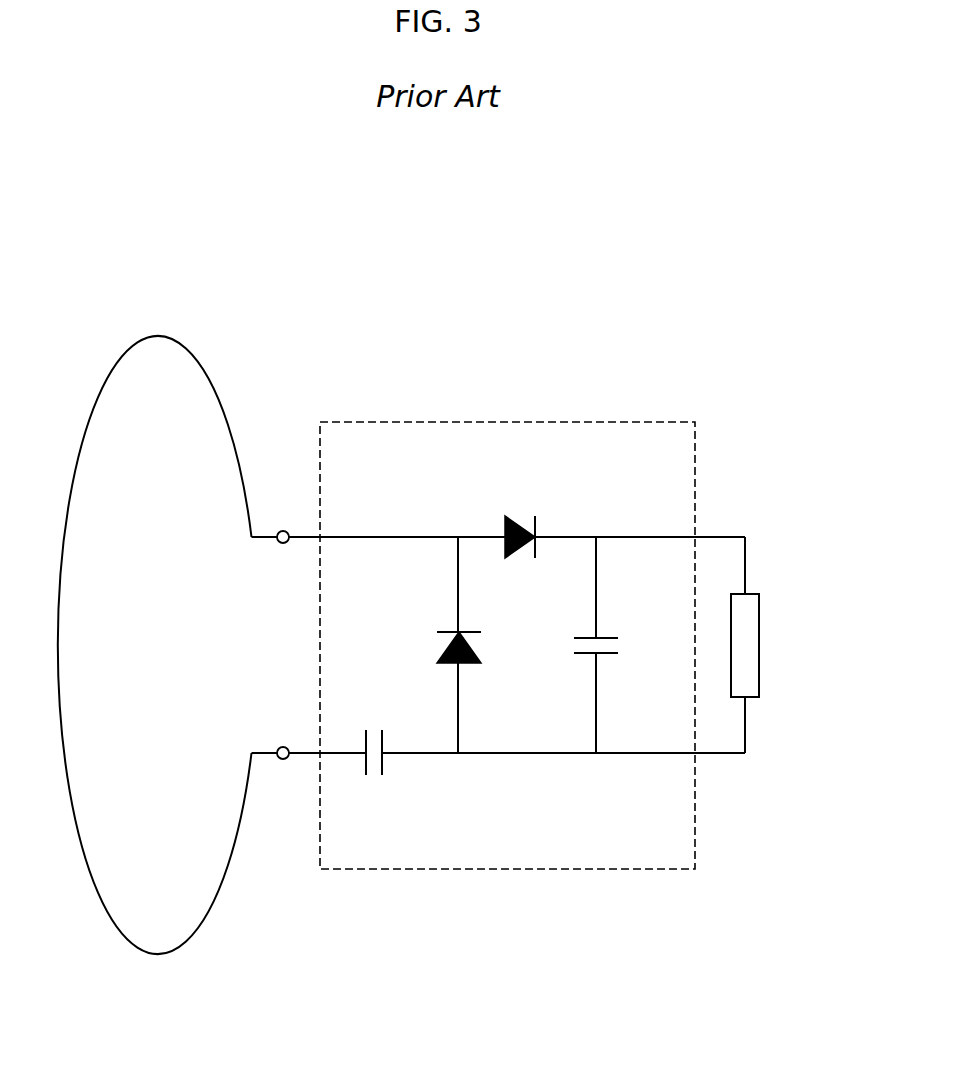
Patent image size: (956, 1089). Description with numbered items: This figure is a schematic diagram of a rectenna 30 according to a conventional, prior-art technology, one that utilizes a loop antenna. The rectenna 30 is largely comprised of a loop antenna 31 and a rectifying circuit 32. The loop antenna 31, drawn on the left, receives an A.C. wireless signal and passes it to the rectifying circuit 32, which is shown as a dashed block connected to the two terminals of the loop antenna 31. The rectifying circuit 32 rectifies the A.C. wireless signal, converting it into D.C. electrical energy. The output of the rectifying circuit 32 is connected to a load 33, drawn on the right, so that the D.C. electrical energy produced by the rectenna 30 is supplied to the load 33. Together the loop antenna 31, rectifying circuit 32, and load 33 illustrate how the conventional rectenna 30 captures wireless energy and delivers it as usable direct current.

The rectenna 30 is at (455, 274).
The loop antenna 31 is at (158, 338).
The rectifying circuit 32 is at (507, 422).
The load 33 is at (758, 594).